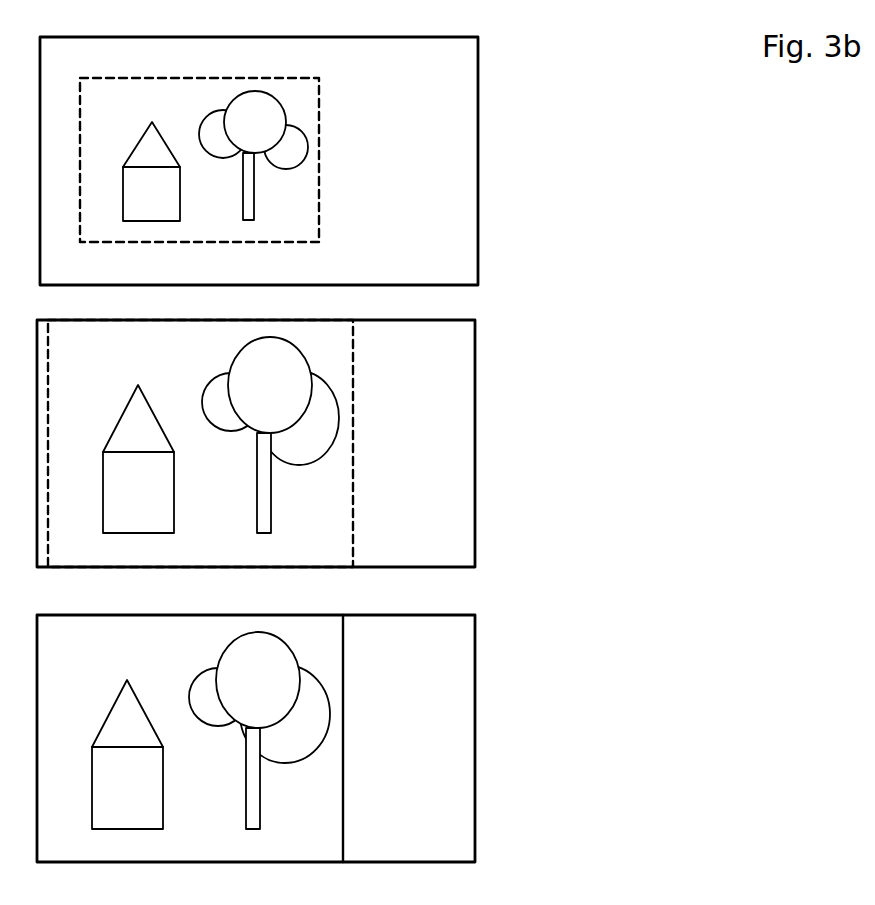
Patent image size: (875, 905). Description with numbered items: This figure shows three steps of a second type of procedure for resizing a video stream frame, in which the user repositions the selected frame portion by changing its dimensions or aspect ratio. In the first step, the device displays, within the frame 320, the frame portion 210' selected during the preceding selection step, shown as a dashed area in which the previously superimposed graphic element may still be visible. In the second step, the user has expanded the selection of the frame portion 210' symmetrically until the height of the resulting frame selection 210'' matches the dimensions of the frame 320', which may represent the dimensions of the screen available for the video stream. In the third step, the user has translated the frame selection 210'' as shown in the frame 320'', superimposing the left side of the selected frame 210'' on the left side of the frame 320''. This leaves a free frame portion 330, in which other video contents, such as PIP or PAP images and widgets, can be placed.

The selected frame portion 210' is at (356, 134).
The expanded frame selection 210'' is at (332, 574).
The frame 320 is at (332, 161).
The frame 320' is at (335, 443).
The frame 320'' is at (339, 738).
The free frame portion 330 is at (398, 722).